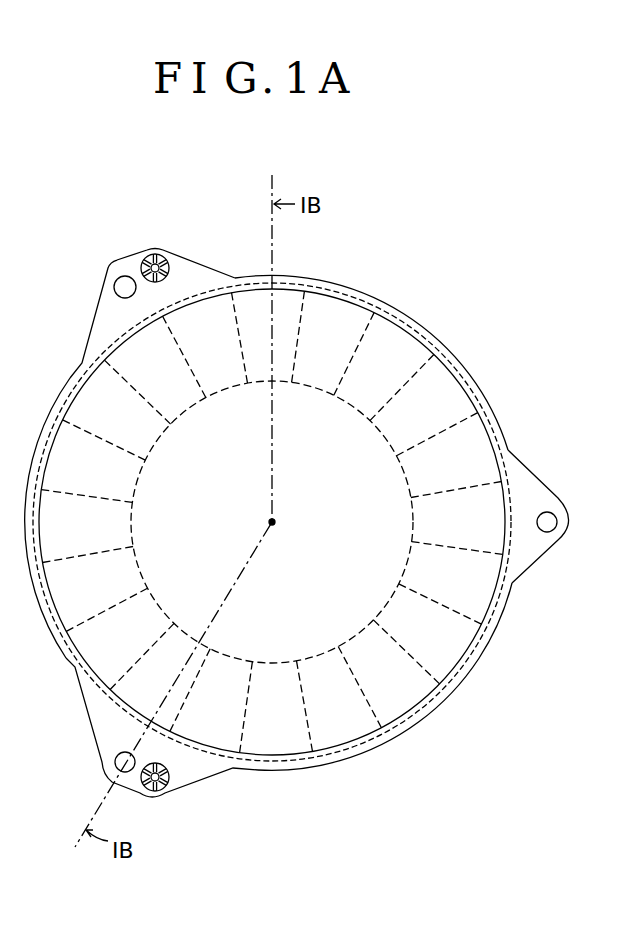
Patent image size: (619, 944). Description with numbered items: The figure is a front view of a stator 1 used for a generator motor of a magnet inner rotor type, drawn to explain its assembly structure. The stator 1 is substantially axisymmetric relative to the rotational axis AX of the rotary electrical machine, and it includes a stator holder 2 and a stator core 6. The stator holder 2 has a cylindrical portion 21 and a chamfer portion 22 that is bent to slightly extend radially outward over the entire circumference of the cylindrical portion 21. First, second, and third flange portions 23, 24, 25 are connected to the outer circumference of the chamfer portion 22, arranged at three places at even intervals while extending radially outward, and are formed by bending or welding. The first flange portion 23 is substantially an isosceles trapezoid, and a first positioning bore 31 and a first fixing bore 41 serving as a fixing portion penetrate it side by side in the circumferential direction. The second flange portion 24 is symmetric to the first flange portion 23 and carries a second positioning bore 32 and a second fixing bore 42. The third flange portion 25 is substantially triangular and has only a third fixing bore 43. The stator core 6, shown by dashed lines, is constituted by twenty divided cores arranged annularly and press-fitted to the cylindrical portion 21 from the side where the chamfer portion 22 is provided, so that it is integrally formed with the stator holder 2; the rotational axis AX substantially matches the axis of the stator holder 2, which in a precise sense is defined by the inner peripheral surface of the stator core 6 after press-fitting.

The stator 1 is at (196, 203).
The stator holder 2 is at (411, 298).
The cylindrical portion 21 is at (462, 375).
The chamfer portion 22 is at (422, 328).
The first flange portion 23 is at (107, 305).
The second flange portion 24 is at (103, 726).
The third flange portion 25 is at (528, 553).
The first positioning bore 31 is at (147, 254).
The second positioning bore 32 is at (164, 788).
The first fixing bore 41 is at (117, 278).
The second fixing bore 42 is at (115, 763).
The third fixing bore 43 is at (548, 512).
The stator core 6 is at (338, 715).
The rotational axis AX is at (272, 523).